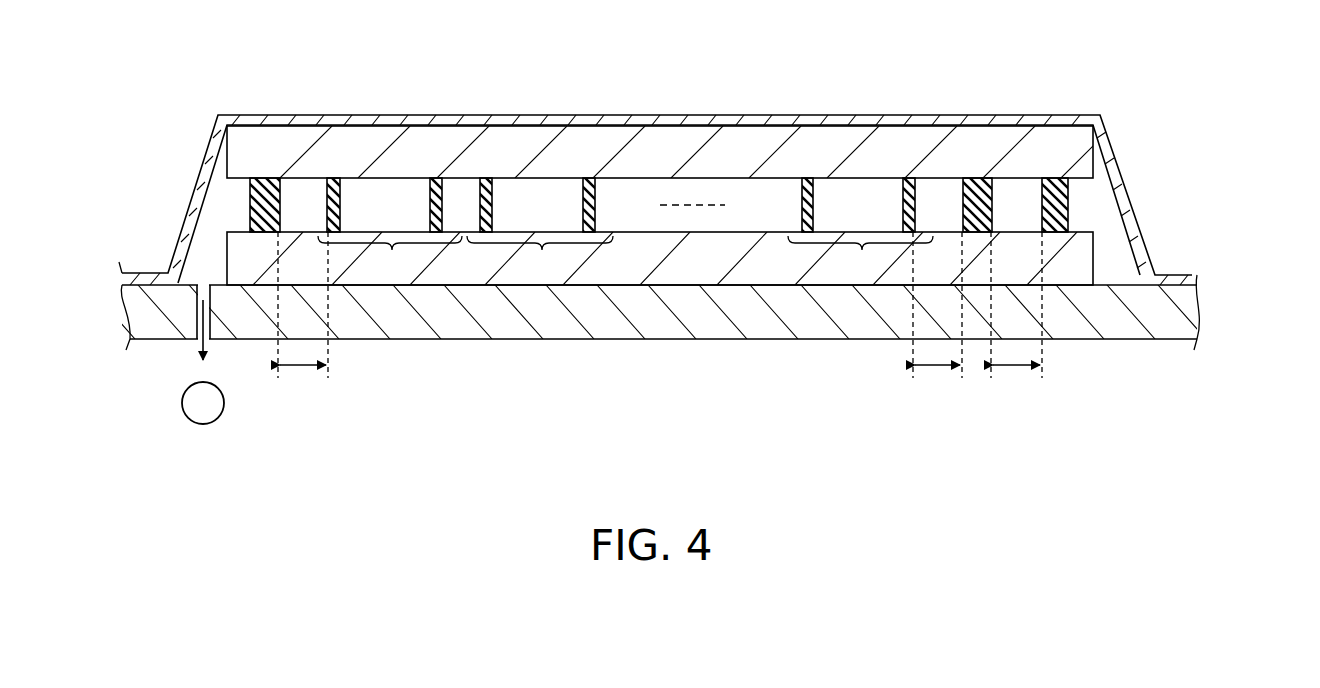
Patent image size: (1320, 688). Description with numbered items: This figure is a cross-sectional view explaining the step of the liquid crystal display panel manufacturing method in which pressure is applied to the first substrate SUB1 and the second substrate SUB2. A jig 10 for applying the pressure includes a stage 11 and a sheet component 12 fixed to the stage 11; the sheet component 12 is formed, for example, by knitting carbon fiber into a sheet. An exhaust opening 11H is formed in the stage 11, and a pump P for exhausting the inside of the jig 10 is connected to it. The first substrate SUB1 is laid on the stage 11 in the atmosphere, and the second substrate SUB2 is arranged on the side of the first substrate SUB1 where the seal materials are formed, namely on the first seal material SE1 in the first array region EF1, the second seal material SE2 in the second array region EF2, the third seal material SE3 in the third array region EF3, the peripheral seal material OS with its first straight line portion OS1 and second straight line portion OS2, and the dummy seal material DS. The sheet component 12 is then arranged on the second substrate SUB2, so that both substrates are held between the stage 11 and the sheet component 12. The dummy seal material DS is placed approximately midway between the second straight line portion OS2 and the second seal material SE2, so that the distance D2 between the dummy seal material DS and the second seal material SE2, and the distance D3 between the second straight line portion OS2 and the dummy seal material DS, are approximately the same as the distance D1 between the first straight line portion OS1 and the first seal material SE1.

The jig 10 is at (676, 257).
The stage 11 is at (1172, 333).
The exhaust opening 11H is at (198, 343).
The sheet component 12 is at (1172, 277).
The first substrate SUB1 is at (700, 273).
The second substrate SUB2 is at (688, 138).
The peripheral seal material OS is at (669, 147).
The first straight line portion OS1 is at (267, 178).
The second straight line portion OS2 is at (1053, 178).
The first seal material SE1 is at (338, 178).
The second seal material SE2 is at (808, 178).
The third seal material SE3 is at (487, 178).
The dummy seal material DS is at (978, 178).
The first array region EF1 is at (392, 252).
The second array region EF2 is at (862, 252).
The third array region EF3 is at (542, 252).
The distance D1 is at (303, 315).
The distance D2 is at (937, 315).
The distance D3 is at (1016, 315).
The pump P is at (203, 362).